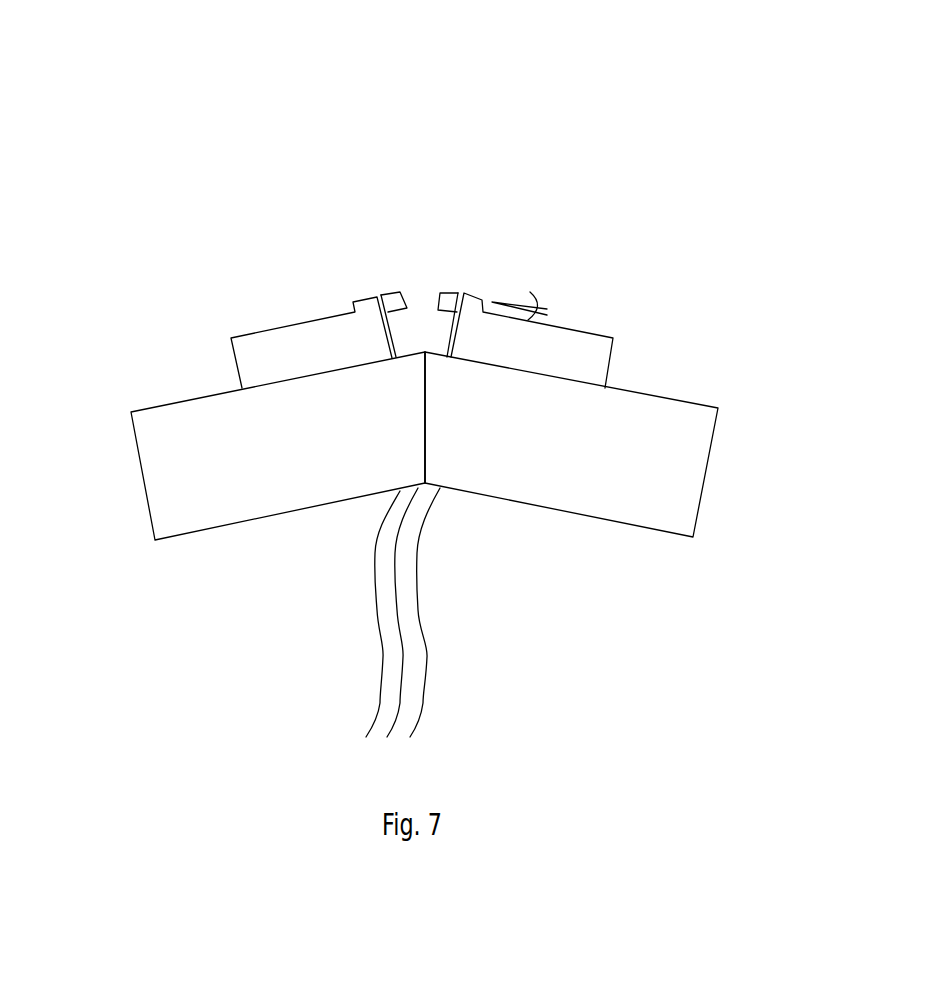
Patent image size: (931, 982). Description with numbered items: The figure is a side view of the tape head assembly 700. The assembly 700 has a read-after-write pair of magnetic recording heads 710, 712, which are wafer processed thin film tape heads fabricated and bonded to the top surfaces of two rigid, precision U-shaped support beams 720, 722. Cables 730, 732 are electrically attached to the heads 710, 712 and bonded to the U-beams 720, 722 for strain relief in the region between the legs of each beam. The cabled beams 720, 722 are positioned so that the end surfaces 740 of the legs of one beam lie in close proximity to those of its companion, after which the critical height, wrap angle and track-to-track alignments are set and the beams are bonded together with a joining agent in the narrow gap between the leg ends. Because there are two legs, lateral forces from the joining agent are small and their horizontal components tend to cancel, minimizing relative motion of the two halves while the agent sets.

The tape head assembly 700 is at (260, 120).
The magnetic recording head 710 is at (366, 280).
The magnetic recording head 712 is at (468, 280).
The U-shaped support beam 720 is at (175, 485).
The U-shaped support beam 722 is at (675, 483).
The cable 730 is at (382, 603).
The cable 732 is at (410, 558).
The end surfaces of the legs 740 is at (425, 397).